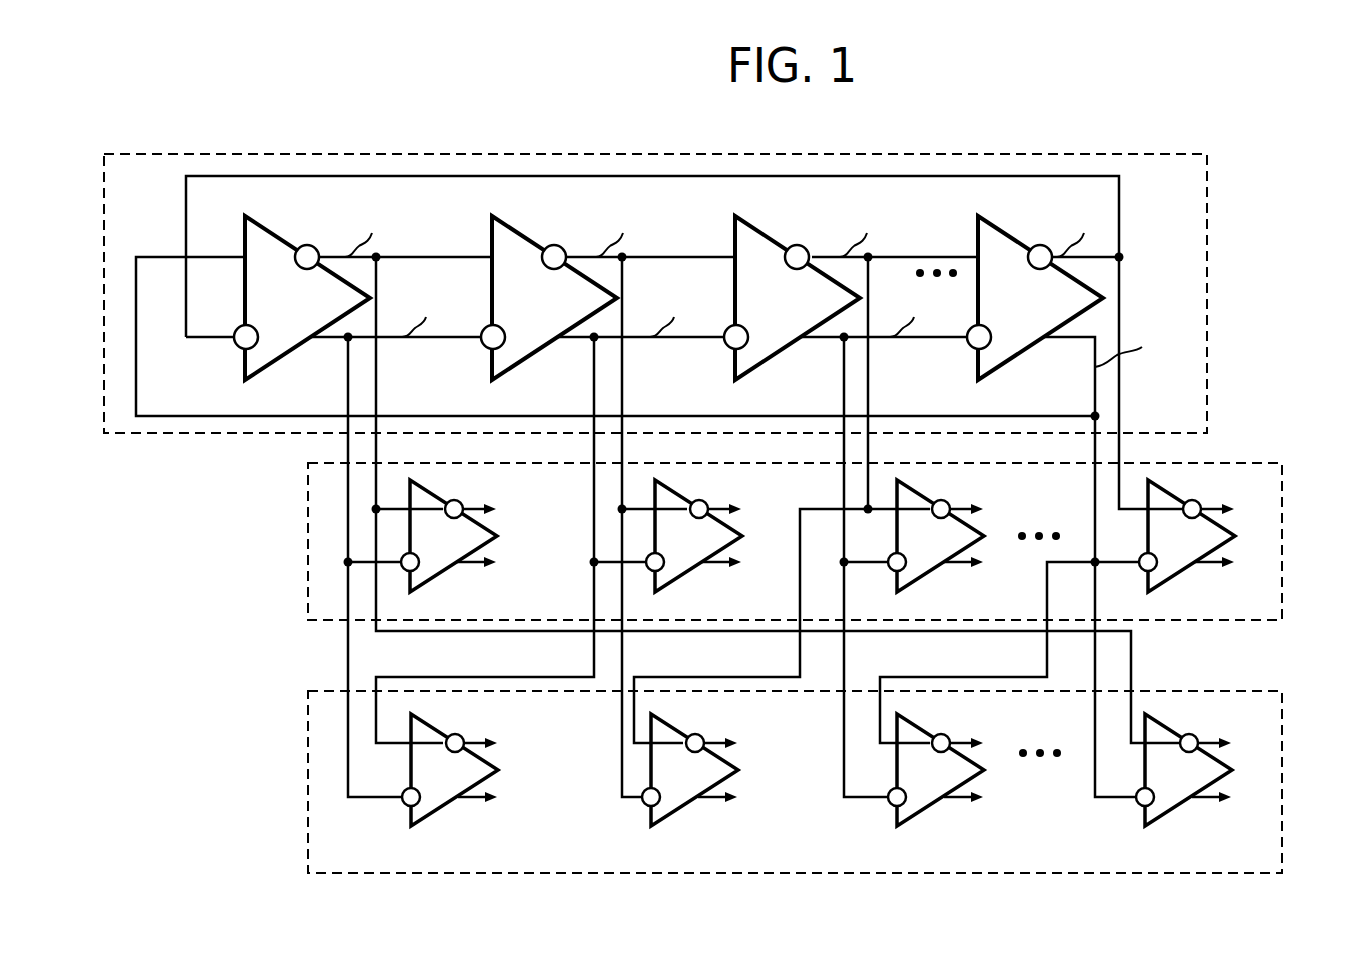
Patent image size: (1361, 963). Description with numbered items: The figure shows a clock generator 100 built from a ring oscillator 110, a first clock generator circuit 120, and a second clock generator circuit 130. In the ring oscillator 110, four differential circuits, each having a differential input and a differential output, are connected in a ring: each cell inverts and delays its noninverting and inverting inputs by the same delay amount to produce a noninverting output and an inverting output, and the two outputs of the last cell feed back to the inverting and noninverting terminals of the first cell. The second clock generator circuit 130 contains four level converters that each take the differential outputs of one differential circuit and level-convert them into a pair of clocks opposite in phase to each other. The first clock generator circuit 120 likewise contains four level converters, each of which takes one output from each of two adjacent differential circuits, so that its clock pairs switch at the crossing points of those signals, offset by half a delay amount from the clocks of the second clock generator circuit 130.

The clock generator 100 is at (238, 636).
The ring oscillator 110 is at (1207, 260).
The first clock generator circuit 120 is at (1241, 691).
The second clock generator circuit 130 is at (1242, 463).